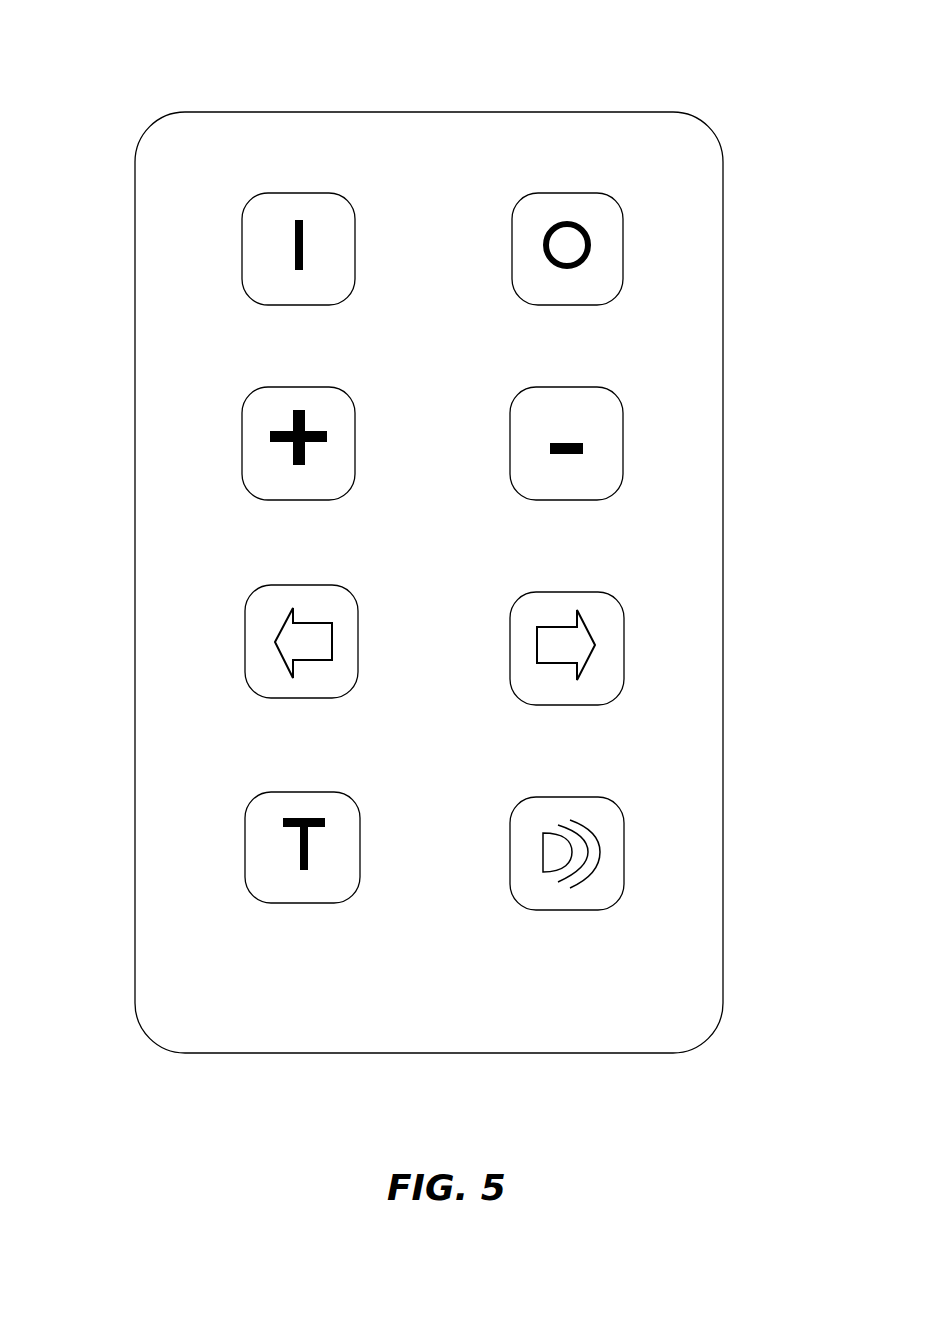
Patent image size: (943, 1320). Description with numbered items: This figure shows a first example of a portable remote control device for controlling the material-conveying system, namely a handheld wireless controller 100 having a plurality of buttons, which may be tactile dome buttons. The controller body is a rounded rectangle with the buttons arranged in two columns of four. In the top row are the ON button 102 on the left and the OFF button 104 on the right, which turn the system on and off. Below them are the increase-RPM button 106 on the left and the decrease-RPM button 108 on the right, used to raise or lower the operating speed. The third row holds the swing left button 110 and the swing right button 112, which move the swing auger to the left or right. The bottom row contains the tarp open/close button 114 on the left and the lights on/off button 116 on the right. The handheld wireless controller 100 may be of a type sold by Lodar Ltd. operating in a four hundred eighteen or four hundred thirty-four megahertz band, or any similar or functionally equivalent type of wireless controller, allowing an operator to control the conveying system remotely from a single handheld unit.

The handheld wireless controller 100 is at (433, 112).
The ON button 102 is at (242, 249).
The OFF button 104 is at (623, 249).
The increase-RPM button 106 is at (242, 443).
The decrease-RPM button 108 is at (623, 443).
The swing left button 110 is at (245, 642).
The swing right button 112 is at (624, 642).
The tarp open/close button 114 is at (245, 848).
The lights on/off button 116 is at (624, 857).